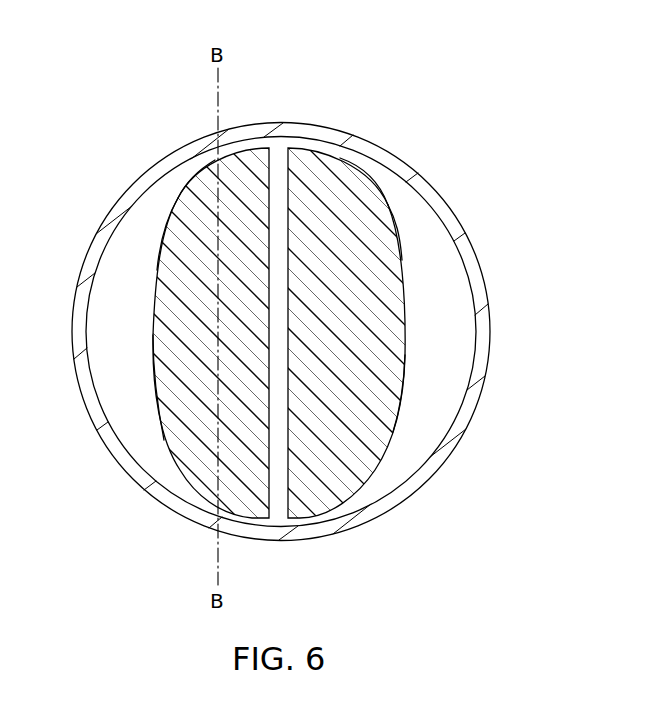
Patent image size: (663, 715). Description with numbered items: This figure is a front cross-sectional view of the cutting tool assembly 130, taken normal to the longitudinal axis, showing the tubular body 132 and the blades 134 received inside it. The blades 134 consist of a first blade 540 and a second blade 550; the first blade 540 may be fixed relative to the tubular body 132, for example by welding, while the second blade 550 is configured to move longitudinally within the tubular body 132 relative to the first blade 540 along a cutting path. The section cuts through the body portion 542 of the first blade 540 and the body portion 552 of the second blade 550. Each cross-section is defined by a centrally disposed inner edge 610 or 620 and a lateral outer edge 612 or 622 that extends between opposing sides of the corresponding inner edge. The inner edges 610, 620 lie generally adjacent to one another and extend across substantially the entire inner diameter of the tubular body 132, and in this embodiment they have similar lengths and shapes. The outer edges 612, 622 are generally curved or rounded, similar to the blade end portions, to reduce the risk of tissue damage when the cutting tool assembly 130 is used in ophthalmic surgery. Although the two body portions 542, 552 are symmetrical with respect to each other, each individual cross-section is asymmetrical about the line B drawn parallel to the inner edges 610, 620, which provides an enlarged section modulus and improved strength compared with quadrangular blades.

The cutting tool assembly 130 is at (495, 88).
The tubular body 132 is at (490, 330).
The blades 134 is at (352, 72).
The first blade 540 is at (372, 184).
The body portion 542 is at (390, 218).
The second blade 550 is at (182, 190).
The body portion 552 is at (167, 233).
The inner edge 610 is at (283, 310).
The outer edge 612 is at (402, 407).
The inner edge 620 is at (278, 288).
The outer edge 622 is at (160, 432).